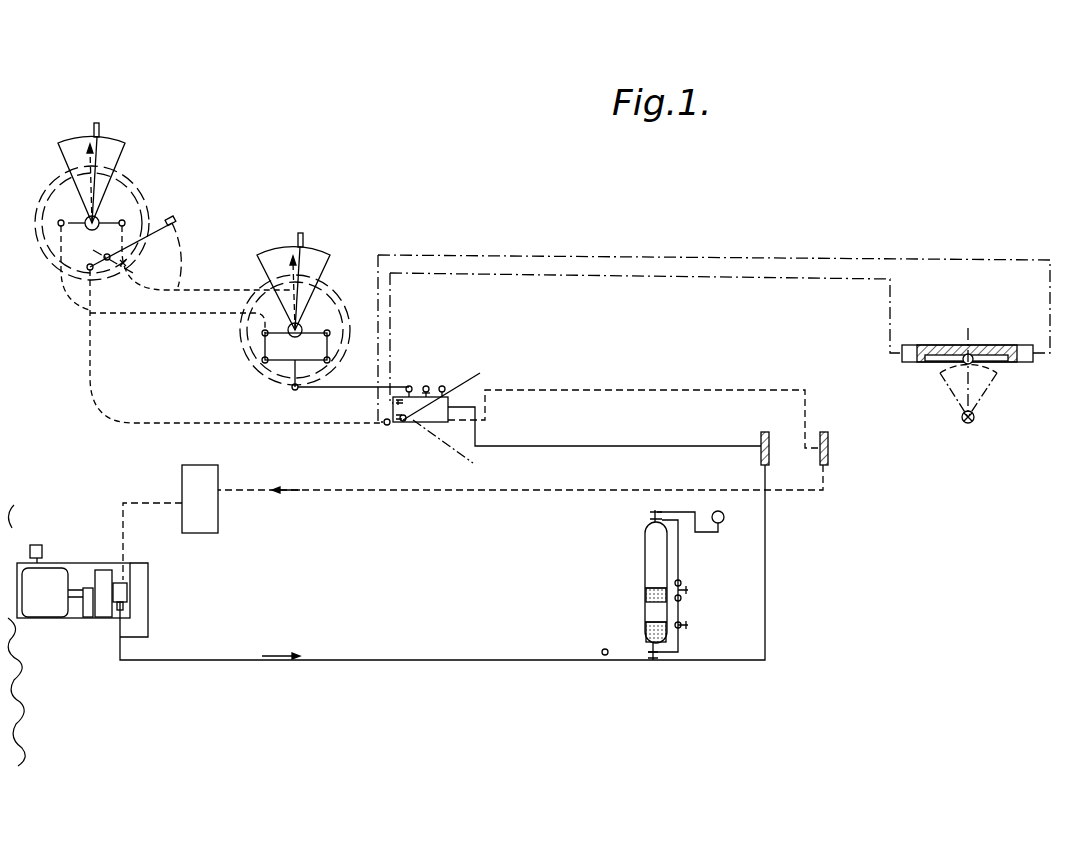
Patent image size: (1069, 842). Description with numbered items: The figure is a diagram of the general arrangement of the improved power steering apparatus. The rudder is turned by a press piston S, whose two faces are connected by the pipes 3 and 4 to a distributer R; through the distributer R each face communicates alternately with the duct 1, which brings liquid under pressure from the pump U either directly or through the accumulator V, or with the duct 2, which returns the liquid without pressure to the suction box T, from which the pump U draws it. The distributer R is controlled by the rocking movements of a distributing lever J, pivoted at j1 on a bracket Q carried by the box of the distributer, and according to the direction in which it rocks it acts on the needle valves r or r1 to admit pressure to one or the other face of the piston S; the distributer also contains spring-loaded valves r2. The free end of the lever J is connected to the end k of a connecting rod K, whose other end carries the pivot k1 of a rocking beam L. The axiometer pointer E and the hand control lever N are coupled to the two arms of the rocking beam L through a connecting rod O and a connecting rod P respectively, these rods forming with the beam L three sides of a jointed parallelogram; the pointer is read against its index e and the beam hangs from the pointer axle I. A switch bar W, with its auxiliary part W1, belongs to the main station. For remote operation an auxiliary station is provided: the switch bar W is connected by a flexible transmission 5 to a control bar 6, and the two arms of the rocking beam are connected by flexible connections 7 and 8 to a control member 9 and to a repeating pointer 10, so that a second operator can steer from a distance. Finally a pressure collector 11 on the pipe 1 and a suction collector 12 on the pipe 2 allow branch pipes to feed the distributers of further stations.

The duct 1 is at (442, 533).
The duct 2 is at (628, 392).
The pipe 3 is at (658, 279).
The pipe 4 is at (650, 256).
The flexible transmission 5 is at (89, 372).
The control bar 6 is at (145, 241).
The flexible connection 7 is at (168, 313).
The flexible connection 8 is at (201, 290).
The control member 9 is at (100, 156).
The repeating pointer 10 is at (90, 160).
The pressure collector 11 is at (769, 442).
The suction collector 12 is at (829, 443).
The axiometer pointer E is at (288, 256).
The index e is at (267, 257).
The hand control lever N is at (301, 265).
The shaft I is at (240, 353).
The connecting rod P is at (264, 337).
The rocking beam L is at (292, 351).
The connecting rod O is at (330, 347).
The pivot k1 is at (290, 363).
The connecting rod K is at (292, 373).
The end of connecting rod k is at (294, 390).
The distributing lever J is at (350, 389).
The bracket Q is at (418, 403).
The needle valve r is at (420, 386).
The needle valve r1 is at (444, 389).
The spring-loaded valve r2 is at (375, 453).
The pivot axle j1 is at (429, 386).
The switch bar W is at (452, 398).
The slide W1 is at (463, 440).
The distributer R is at (437, 420).
The press piston S is at (948, 347).
The suction box T is at (213, 483).
The pump U is at (103, 580).
The accumulator V is at (653, 568).